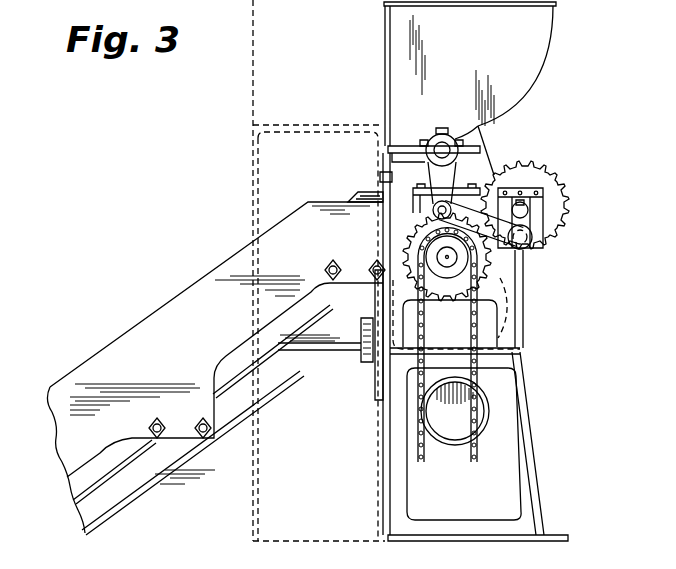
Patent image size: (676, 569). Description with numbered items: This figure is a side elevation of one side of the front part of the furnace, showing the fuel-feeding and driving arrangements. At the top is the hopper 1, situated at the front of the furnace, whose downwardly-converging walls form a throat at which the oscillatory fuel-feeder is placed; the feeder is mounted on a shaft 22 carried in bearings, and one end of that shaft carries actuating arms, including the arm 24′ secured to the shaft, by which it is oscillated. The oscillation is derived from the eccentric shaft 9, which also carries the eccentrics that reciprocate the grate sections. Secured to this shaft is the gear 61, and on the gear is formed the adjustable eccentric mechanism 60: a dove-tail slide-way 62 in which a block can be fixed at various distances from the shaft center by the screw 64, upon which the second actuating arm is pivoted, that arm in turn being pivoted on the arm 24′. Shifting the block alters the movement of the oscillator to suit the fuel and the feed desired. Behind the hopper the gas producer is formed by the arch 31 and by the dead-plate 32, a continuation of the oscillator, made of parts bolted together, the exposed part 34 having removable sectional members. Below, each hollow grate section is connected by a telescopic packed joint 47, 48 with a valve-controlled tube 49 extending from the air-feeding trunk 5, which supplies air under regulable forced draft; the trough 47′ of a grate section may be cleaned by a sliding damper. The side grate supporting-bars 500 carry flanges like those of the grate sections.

The hopper 1 is at (528, 50).
The air-feeding trunk 5 is at (505, 312).
The eccentric shaft 9 is at (526, 206).
The oscillator shaft 22 is at (478, 127).
The actuating-arm 24′ is at (407, 197).
The arch 31 is at (319, 270).
The dead-plate 32 is at (382, 177).
The dead-plate part 34 is at (354, 194).
The telescopic packed joint 47 is at (360, 353).
The trough 47′ is at (228, 377).
The telescopic packed joint 48 is at (372, 358).
The valve-controlled tube 49 is at (381, 322).
The adjustable eccentric mechanism 60 is at (542, 299).
The gear 61 is at (562, 218).
The dove-tail slide-way 62 is at (528, 187).
The screw 64 is at (536, 244).
The side grate supporting-bars 500 is at (163, 308).